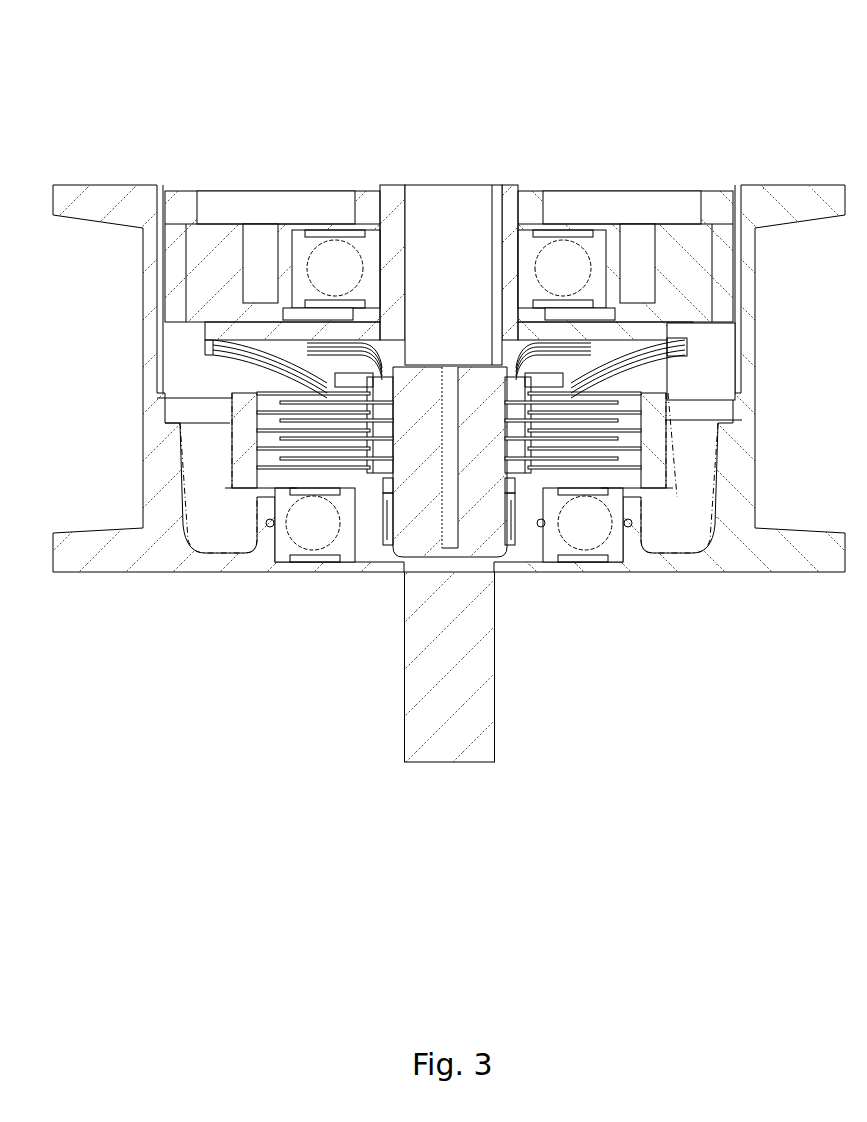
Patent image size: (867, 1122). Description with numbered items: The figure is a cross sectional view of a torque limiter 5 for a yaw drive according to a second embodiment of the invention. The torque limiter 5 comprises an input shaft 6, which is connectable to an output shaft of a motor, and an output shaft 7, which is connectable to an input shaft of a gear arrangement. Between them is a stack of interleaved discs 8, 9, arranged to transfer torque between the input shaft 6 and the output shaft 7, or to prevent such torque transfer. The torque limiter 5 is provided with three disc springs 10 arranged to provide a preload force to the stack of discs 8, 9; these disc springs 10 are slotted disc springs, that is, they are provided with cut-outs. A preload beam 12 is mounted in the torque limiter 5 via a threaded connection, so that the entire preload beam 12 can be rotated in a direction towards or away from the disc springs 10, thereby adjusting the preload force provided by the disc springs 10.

The torque limiter 5 is at (747, 95).
The input shaft 6 is at (392, 248).
The output shaft 7 is at (447, 692).
The discs 8 is at (293, 453).
The discs 9 is at (627, 460).
The disc springs 10 is at (670, 353).
The preload beam 12 is at (205, 285).